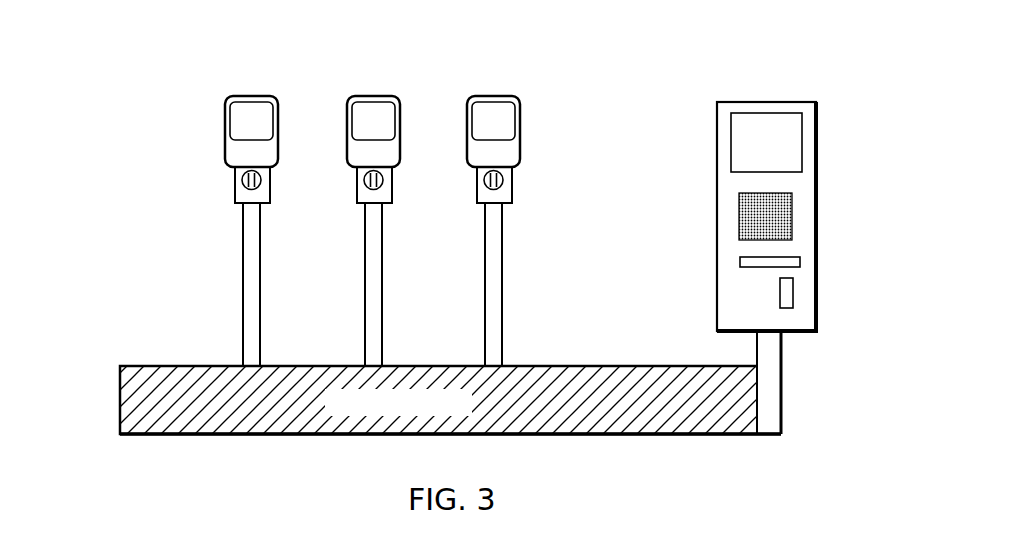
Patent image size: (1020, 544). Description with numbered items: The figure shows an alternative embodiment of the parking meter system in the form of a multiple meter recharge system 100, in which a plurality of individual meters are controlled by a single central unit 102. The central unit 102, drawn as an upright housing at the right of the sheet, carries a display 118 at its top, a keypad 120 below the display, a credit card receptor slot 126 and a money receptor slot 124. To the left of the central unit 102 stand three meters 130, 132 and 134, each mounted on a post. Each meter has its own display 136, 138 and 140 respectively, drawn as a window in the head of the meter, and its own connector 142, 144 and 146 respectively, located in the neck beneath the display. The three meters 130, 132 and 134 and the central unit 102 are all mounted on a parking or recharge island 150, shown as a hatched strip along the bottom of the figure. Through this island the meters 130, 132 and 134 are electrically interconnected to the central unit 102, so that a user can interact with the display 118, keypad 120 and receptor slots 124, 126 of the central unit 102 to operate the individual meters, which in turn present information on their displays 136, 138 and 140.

The multiple meter recharge system 100 is at (603, 62).
The central unit 102 is at (812, 186).
The display 118 is at (773, 123).
The keypad 120 is at (782, 220).
The money receptor slot 124 is at (793, 295).
The credit card receptor slot 126 is at (758, 265).
The meter 130 is at (252, 95).
The meter 132 is at (374, 95).
The meter 134 is at (494, 95).
The display 136 is at (238, 125).
The display 138 is at (360, 125).
The display 140 is at (480, 125).
The connector 142 is at (238, 188).
The connector 144 is at (360, 188).
The connector 146 is at (480, 188).
The parking or recharge island 150 is at (120, 398).